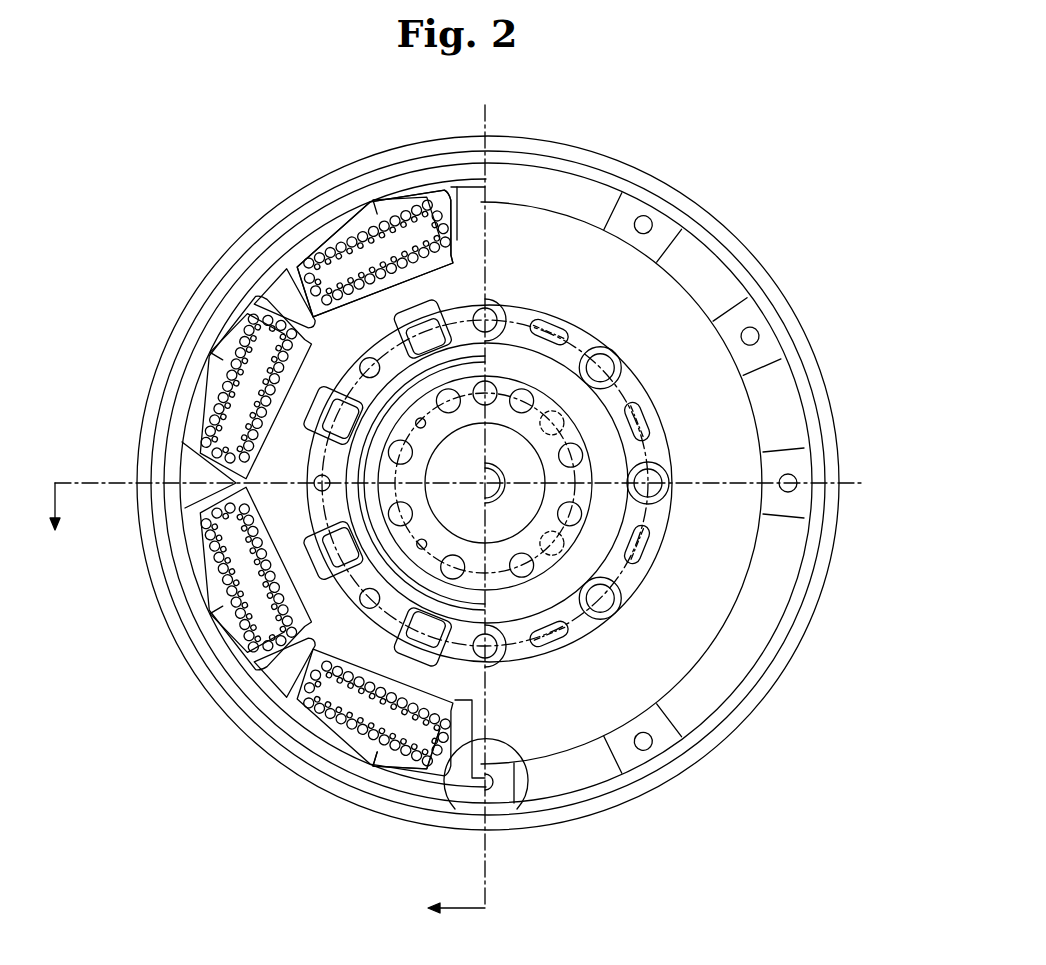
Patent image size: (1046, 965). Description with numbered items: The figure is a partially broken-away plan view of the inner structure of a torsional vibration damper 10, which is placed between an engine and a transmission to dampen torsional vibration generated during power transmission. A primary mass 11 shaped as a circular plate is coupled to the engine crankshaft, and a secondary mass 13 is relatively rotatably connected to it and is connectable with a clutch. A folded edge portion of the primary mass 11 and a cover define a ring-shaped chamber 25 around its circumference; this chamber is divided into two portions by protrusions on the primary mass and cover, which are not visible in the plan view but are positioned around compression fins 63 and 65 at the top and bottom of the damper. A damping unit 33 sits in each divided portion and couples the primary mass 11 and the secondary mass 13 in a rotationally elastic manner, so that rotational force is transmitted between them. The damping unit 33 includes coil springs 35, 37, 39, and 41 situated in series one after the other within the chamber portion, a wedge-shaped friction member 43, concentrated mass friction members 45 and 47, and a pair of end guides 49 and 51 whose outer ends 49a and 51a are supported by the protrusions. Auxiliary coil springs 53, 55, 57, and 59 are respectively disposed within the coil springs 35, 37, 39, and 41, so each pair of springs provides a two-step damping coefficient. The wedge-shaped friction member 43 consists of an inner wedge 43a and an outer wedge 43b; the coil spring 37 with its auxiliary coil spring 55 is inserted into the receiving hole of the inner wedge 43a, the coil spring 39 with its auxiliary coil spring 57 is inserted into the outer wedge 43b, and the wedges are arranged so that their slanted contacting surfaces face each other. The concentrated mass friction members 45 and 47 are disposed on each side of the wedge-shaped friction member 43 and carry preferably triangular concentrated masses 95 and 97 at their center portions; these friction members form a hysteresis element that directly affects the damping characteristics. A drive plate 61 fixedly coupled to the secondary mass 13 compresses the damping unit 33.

The torsional vibration damper 10 is at (700, 177).
The primary mass 11 is at (197, 668).
The secondary mass 13 is at (683, 303).
The ring-shaped chamber 25 is at (208, 600).
The damping unit 33 is at (174, 510).
The coil spring 35 is at (370, 223).
The coil spring 37 is at (227, 372).
The coil spring 39 is at (223, 582).
The coil spring 41 is at (358, 730).
The wedge-shaped friction member 43 is at (78, 398).
The inner wedge 43a is at (188, 432).
The outer wedge 43b is at (187, 472).
The concentrated mass friction member 45 is at (287, 260).
The concentrated mass friction member 47 is at (265, 683).
The end guide 49 is at (407, 192).
The outer end 49a is at (450, 192).
The end guide 51 is at (407, 770).
The outer end 51a is at (492, 792).
The auxiliary coil spring 53 is at (350, 240).
The auxiliary coil spring 55 is at (223, 390).
The auxiliary coil spring 57 is at (228, 593).
The auxiliary coil spring 59 is at (350, 727).
The drive plate 61 is at (317, 713).
The compression fin 63 is at (463, 192).
The compression fin 65 is at (466, 800).
The concentrated mass 95 is at (273, 290).
The concentrated mass 97 is at (277, 705).